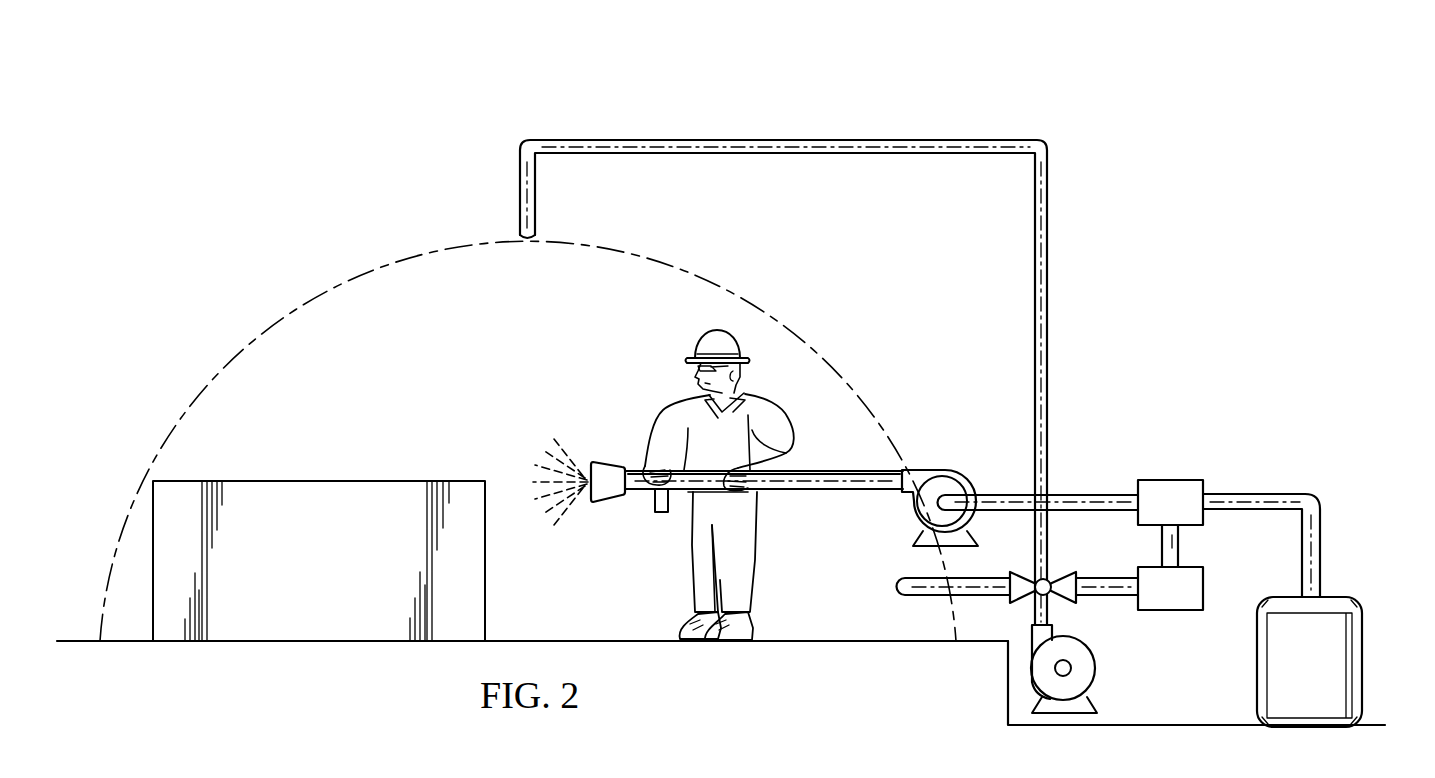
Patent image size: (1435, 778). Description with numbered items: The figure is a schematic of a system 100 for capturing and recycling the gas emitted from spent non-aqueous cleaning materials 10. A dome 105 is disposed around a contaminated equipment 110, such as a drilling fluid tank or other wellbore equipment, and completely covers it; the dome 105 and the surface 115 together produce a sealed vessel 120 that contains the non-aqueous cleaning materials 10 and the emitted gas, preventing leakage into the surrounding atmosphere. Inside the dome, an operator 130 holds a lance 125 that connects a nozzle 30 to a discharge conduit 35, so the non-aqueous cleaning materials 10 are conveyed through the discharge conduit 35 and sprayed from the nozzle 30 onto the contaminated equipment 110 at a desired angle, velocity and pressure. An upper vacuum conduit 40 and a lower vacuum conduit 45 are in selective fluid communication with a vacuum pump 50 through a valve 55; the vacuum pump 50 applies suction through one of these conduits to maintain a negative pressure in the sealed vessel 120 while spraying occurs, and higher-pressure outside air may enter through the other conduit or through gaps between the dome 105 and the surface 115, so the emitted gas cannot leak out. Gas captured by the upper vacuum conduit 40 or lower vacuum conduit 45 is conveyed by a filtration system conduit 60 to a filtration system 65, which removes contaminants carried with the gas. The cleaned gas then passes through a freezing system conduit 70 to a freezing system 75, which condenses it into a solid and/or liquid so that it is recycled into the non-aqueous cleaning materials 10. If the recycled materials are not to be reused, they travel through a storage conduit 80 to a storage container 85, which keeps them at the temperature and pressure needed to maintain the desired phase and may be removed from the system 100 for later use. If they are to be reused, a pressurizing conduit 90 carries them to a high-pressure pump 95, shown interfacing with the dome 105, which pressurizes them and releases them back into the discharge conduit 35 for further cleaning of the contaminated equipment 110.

The system 100 is at (192, 98).
The sealed vessel 120 is at (173, 279).
The dome 105 is at (443, 196).
The surface 115 is at (80, 640).
The contaminated equipment 110 is at (318, 480).
The upper vacuum conduit 40 is at (783, 139).
The non-aqueous cleaning materials 10 is at (541, 418).
The nozzle 30 is at (605, 462).
The discharge conduit 35 is at (838, 470).
The lance 125 is at (661, 514).
The operator 130 is at (716, 328).
The high-pressure pump 95 is at (947, 469).
The pressurizing conduit 90 is at (1093, 494).
The freezing system 75 is at (1190, 479).
The freezing system conduit 70 is at (1179, 545).
The filtration system 65 is at (1190, 611).
The storage conduit 80 is at (1252, 493).
The storage container 85 is at (1364, 668).
The lower vacuum conduit 45 is at (982, 578).
The valve 55 is at (1064, 573).
The filtration system conduit 60 is at (1098, 597).
The vacuum pump 50 is at (1097, 668).